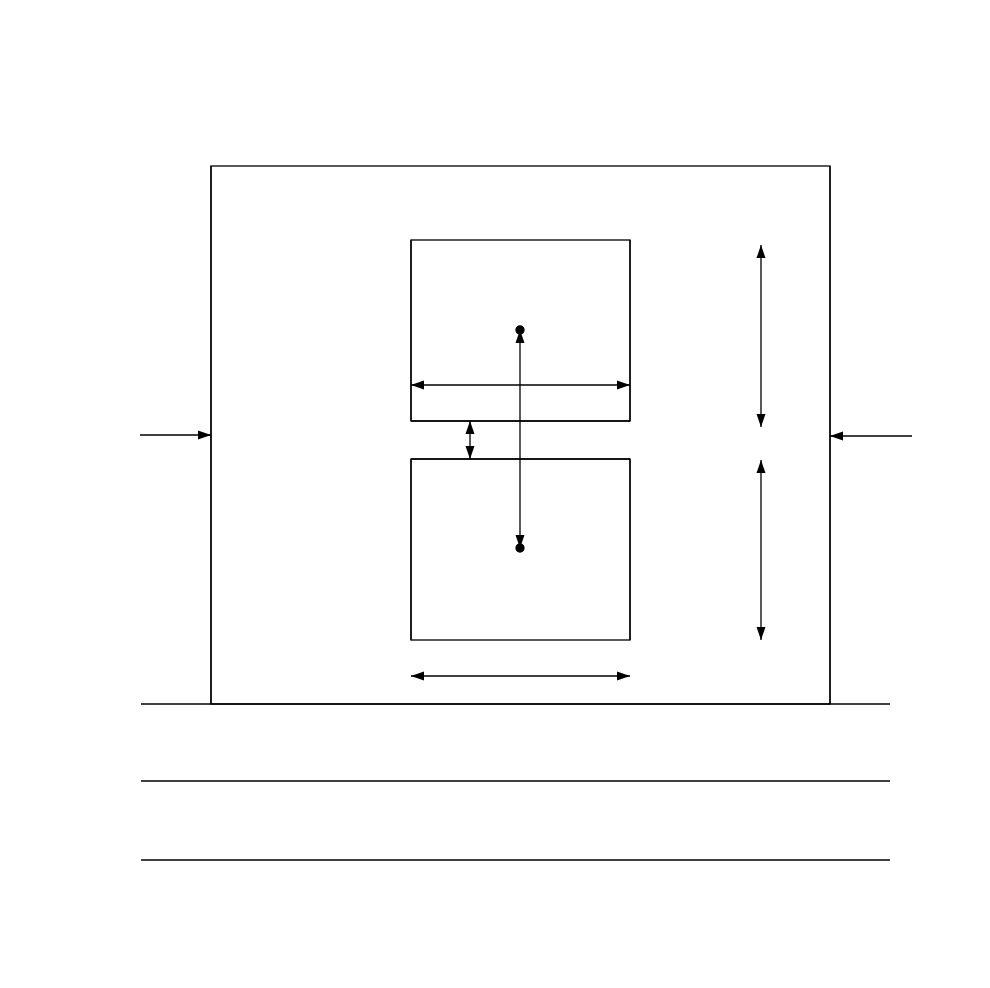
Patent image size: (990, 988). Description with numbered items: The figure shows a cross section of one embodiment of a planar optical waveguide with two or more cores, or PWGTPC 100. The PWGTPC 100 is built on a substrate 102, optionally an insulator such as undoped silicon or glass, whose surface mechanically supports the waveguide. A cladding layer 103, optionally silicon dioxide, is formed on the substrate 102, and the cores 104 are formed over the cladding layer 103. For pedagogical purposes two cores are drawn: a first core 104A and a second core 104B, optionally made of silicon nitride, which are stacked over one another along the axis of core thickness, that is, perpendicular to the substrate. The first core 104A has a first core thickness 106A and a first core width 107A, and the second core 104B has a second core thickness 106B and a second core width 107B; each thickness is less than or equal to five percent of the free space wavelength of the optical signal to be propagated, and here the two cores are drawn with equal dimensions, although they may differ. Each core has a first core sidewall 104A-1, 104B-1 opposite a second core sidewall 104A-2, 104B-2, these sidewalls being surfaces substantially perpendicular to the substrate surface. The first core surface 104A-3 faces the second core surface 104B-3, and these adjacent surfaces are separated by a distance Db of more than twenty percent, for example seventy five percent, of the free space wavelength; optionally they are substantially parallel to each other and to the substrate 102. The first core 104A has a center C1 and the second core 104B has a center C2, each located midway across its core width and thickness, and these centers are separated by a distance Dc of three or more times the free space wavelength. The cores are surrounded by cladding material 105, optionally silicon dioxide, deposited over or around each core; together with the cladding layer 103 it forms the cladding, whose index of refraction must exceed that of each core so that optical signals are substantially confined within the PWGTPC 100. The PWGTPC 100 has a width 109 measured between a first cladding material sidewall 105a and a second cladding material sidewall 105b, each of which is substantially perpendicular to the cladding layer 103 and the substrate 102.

The planar optical waveguide with two or more cores (PWGTPC) 100 is at (565, 132).
The substrate 102 is at (515, 833).
The cladding layer 103 is at (515, 742).
The cores 104 is at (502, 440).
The first core 104A is at (499, 316).
The first core sidewall of first core 104A-1 is at (411, 294).
The second core sidewall of first core 104A-2 is at (630, 297).
The first core surface 104A-3 is at (411, 421).
The second core 104B is at (502, 572).
The first core sidewall of second core 104B-1 is at (411, 622).
The second core sidewall of second core 104B-2 is at (630, 548).
The second core surface 104B-3 is at (411, 459).
The cladding material 105 is at (520, 435).
The first cladding material sidewall 105a is at (830, 261).
The second cladding material sidewall 105b is at (211, 312).
The first core thickness 106A is at (761, 310).
The second core thickness 106B is at (761, 530).
The first core width 107A is at (411, 385).
The second core width 107B is at (450, 676).
The width 109 is at (869, 436).
The center of first core C1 is at (520, 330).
The center of second core C2 is at (520, 548).
The distance between adjacent core surfaces Db is at (470, 437).
The distance between core centers Dc is at (520, 437).